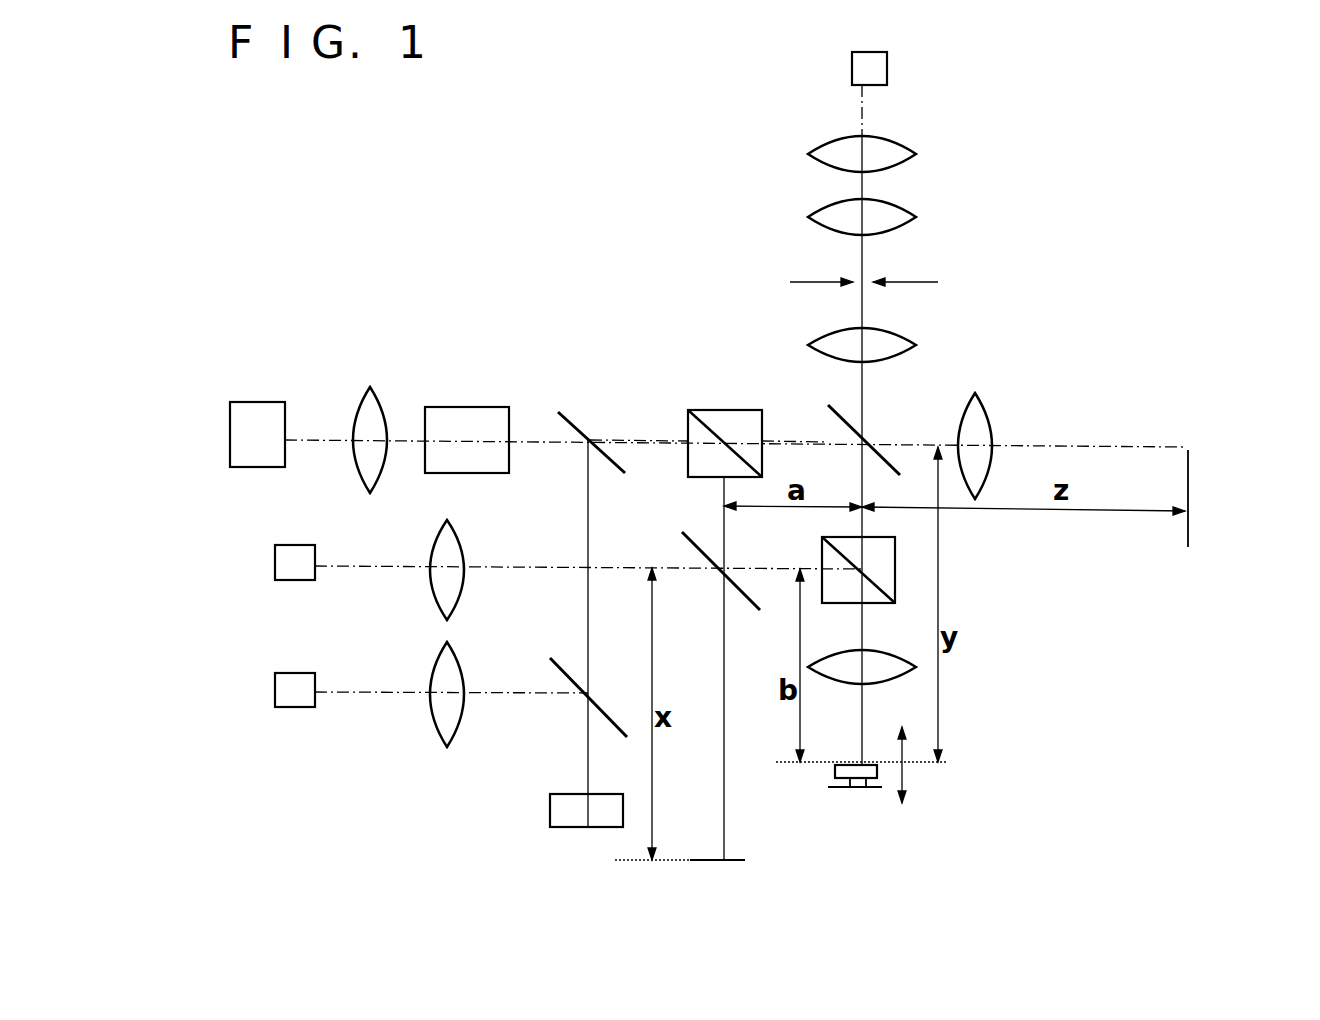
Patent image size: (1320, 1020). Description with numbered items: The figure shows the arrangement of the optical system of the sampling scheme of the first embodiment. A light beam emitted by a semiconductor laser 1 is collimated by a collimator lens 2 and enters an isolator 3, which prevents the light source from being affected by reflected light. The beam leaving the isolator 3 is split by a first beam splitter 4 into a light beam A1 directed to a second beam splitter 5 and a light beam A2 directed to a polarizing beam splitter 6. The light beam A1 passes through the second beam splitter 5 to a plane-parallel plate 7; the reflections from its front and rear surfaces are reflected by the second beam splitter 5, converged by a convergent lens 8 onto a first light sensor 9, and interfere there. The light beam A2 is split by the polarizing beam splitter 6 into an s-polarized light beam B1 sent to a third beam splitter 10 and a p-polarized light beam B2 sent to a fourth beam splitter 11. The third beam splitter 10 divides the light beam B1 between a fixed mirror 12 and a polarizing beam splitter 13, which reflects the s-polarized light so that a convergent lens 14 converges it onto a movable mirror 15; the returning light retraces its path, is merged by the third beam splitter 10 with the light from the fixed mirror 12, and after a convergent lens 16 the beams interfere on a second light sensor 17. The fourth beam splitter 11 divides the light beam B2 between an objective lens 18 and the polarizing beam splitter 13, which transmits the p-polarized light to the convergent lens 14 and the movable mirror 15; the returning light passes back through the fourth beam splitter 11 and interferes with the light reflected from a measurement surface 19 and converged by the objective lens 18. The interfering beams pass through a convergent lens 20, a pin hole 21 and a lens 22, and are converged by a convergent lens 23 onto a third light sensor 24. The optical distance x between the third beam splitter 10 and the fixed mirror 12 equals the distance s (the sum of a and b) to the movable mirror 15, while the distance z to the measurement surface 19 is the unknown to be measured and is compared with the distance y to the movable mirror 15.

The semiconductor laser 1 is at (257, 402).
The collimator lens 2 is at (370, 387).
The isolator 3 is at (470, 407).
The first beam splitter 4 is at (558, 412).
The second beam splitter 5 is at (596, 704).
The polarizing beam splitter 6 is at (693, 410).
The plane-parallel plate 7 is at (550, 810).
The convergent lens 8 is at (462, 665).
The first light sensor 9 is at (296, 707).
The third beam splitter 10 is at (684, 534).
The fourth beam splitter 11 is at (833, 405).
The fixed mirror 12 is at (745, 860).
The polarizing beam splitter 13 is at (895, 573).
The convergent lens 14 is at (913, 670).
The movable mirror 15 is at (835, 773).
The convergent lens 16 is at (435, 595).
The second light sensor 17 is at (285, 580).
The objective lens 18 is at (988, 412).
The measurement surface 19 is at (1188, 487).
The convergent lens 20 is at (825, 330).
The pin hole 21 is at (938, 282).
The lens 22 is at (918, 220).
The convergent lens 23 is at (918, 155).
The third light sensor 24 is at (887, 62).
The light beam A1 is at (588, 500).
The light beam A2 is at (628, 440).
The light beam B1 is at (724, 487).
The light beam B2 is at (793, 440).